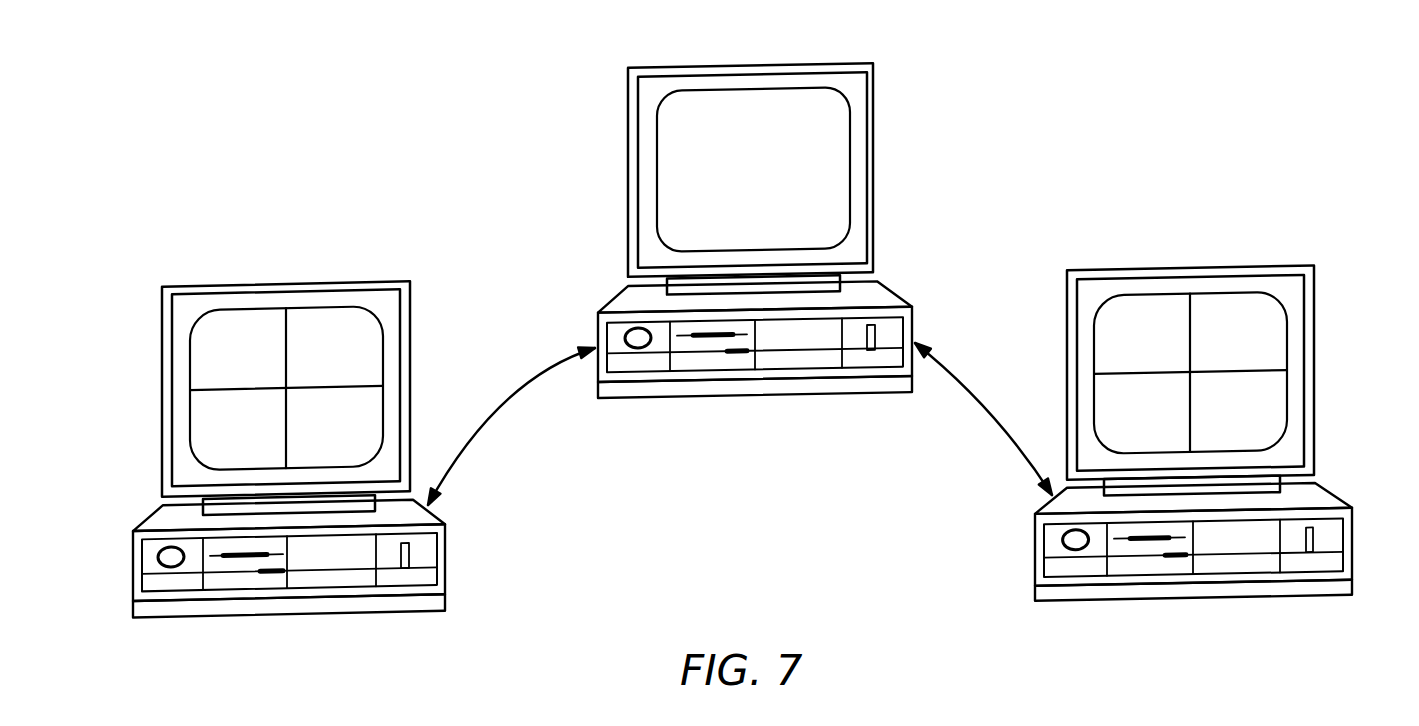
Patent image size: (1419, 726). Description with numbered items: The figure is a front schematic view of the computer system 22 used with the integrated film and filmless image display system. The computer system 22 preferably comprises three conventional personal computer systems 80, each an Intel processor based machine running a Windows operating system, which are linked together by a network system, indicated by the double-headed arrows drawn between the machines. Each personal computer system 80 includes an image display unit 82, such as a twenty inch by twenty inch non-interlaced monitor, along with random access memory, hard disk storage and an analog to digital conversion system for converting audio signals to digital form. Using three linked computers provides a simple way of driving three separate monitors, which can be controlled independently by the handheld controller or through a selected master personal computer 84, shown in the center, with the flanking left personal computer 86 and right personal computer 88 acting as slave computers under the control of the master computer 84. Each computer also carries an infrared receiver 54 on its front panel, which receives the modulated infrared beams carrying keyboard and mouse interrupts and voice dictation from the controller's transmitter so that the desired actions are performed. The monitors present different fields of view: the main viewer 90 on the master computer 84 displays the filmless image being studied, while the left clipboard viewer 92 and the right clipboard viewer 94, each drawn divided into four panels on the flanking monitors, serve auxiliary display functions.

The computer system 22 is at (945, 118).
The infrared receiver 54 is at (170, 553).
The personal computer system 80 is at (133, 562).
The image display unit 82 is at (357, 297).
The master personal computer 84 is at (778, 393).
The left personal computer 86 is at (448, 605).
The right personal computer 88 is at (1243, 598).
The main viewer 90 is at (673, 130).
The left clipboard viewer 92 is at (219, 327).
The right clipboard viewer 94 is at (1135, 324).